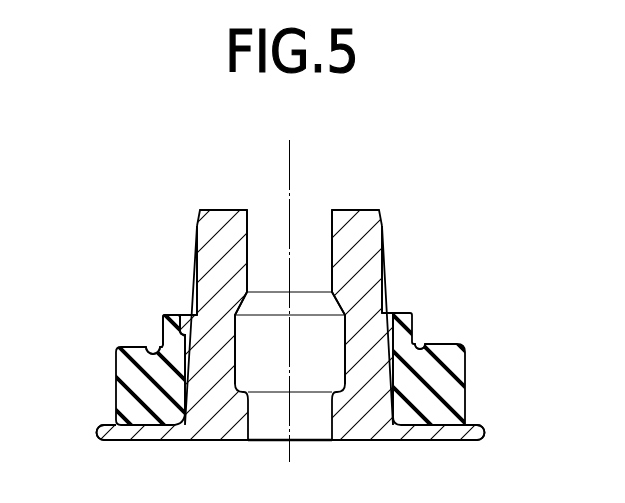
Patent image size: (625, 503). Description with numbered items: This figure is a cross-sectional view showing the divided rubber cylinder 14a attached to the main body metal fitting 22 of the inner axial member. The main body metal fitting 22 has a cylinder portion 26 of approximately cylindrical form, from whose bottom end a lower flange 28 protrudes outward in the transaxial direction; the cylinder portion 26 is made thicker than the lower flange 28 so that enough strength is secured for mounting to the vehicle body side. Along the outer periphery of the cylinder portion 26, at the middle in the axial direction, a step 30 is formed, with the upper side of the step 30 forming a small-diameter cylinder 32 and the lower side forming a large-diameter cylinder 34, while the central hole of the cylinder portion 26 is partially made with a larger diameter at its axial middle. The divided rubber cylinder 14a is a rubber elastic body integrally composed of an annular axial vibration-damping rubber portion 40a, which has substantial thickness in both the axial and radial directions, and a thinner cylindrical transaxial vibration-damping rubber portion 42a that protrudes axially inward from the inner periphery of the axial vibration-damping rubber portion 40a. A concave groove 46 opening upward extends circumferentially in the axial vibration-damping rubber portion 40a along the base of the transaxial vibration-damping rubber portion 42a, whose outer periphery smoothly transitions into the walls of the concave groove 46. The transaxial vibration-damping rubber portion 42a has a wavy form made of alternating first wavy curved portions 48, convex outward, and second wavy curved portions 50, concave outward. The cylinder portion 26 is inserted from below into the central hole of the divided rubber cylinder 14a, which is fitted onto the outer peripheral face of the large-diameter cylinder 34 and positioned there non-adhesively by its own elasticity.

The divided rubber cylinder 14a is at (342, 300).
The main body metal fitting 22 is at (358, 200).
The cylinder portion 26 is at (196, 217).
The lower flange 28 is at (128, 435).
The step 30 is at (382, 318).
The small-diameter cylinder 32 is at (227, 247).
The large-diameter cylinder 34 is at (218, 373).
The axial vibration-damping rubber portion 40a is at (185, 300).
The transaxial vibration-damping rubber portion 42a is at (342, 300).
The concave groove 46 is at (157, 347).
The first wavy curved portion 48 is at (166, 328).
The second wavy curved portion 50 is at (405, 333).